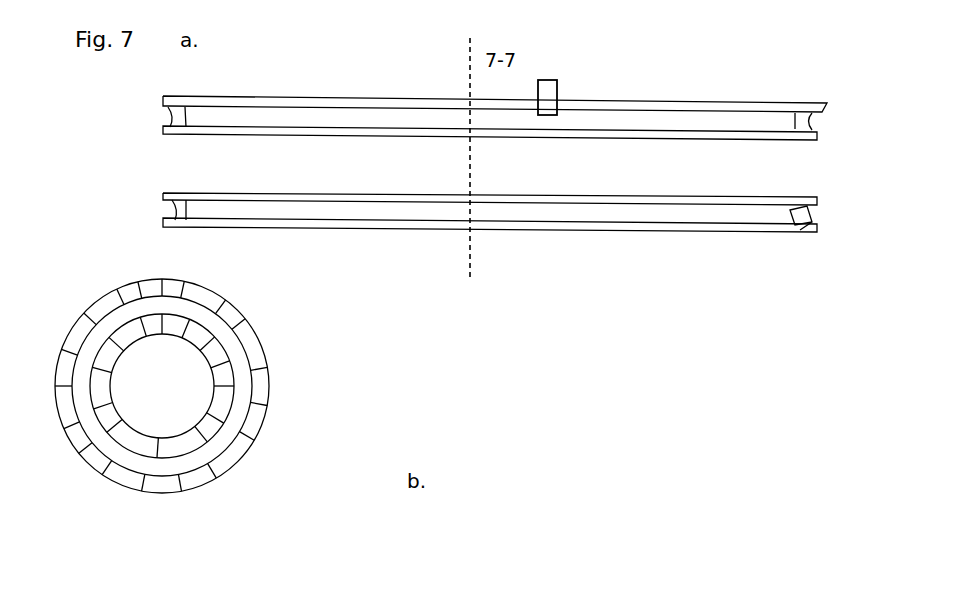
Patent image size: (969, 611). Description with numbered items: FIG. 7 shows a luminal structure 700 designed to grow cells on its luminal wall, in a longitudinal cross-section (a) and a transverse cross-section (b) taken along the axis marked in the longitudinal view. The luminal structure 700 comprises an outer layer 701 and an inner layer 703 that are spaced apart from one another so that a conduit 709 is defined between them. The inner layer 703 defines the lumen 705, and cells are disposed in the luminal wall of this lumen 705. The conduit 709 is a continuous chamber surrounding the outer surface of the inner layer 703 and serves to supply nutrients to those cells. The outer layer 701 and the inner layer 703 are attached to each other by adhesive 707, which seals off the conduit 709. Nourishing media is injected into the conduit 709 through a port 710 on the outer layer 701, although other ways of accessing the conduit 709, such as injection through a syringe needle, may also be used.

The luminal structure 700 is at (358, 69).
The outer layer 701 is at (665, 107).
The inner layer 703 is at (693, 133).
The lumen 705 is at (790, 165).
The adhesive 707 is at (800, 230).
The conduit 709 is at (638, 213).
The port 710 is at (558, 80).